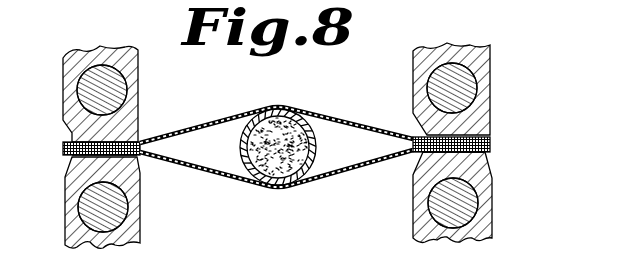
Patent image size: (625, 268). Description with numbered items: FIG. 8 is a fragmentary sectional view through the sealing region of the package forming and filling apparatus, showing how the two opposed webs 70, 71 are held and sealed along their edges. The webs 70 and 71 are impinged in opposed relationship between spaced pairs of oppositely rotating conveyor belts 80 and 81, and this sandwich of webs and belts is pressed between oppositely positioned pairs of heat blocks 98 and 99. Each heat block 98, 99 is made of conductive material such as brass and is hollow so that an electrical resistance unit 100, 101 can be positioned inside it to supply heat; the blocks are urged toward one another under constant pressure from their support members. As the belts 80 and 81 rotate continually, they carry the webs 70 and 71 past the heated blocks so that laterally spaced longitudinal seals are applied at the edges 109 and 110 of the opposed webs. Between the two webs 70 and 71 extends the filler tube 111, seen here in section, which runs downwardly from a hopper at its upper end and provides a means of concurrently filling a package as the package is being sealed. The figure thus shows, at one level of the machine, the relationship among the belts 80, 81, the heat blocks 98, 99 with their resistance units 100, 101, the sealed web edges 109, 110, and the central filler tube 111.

The opposed web 70 is at (233, 116).
The opposed web 71 is at (228, 175).
The conveyor belts 80 is at (274, 134).
The conveyor belts 81 is at (72, 160).
The heat block 98 is at (72, 63).
The heat block 99 is at (72, 235).
The electrical resistance unit 100 is at (95, 92).
The electrical resistance unit 101 is at (80, 208).
The edge of the opposed webs 109 is at (68, 150).
The edge of the opposed webs 110 is at (490, 143).
The filler tube 111 is at (315, 147).